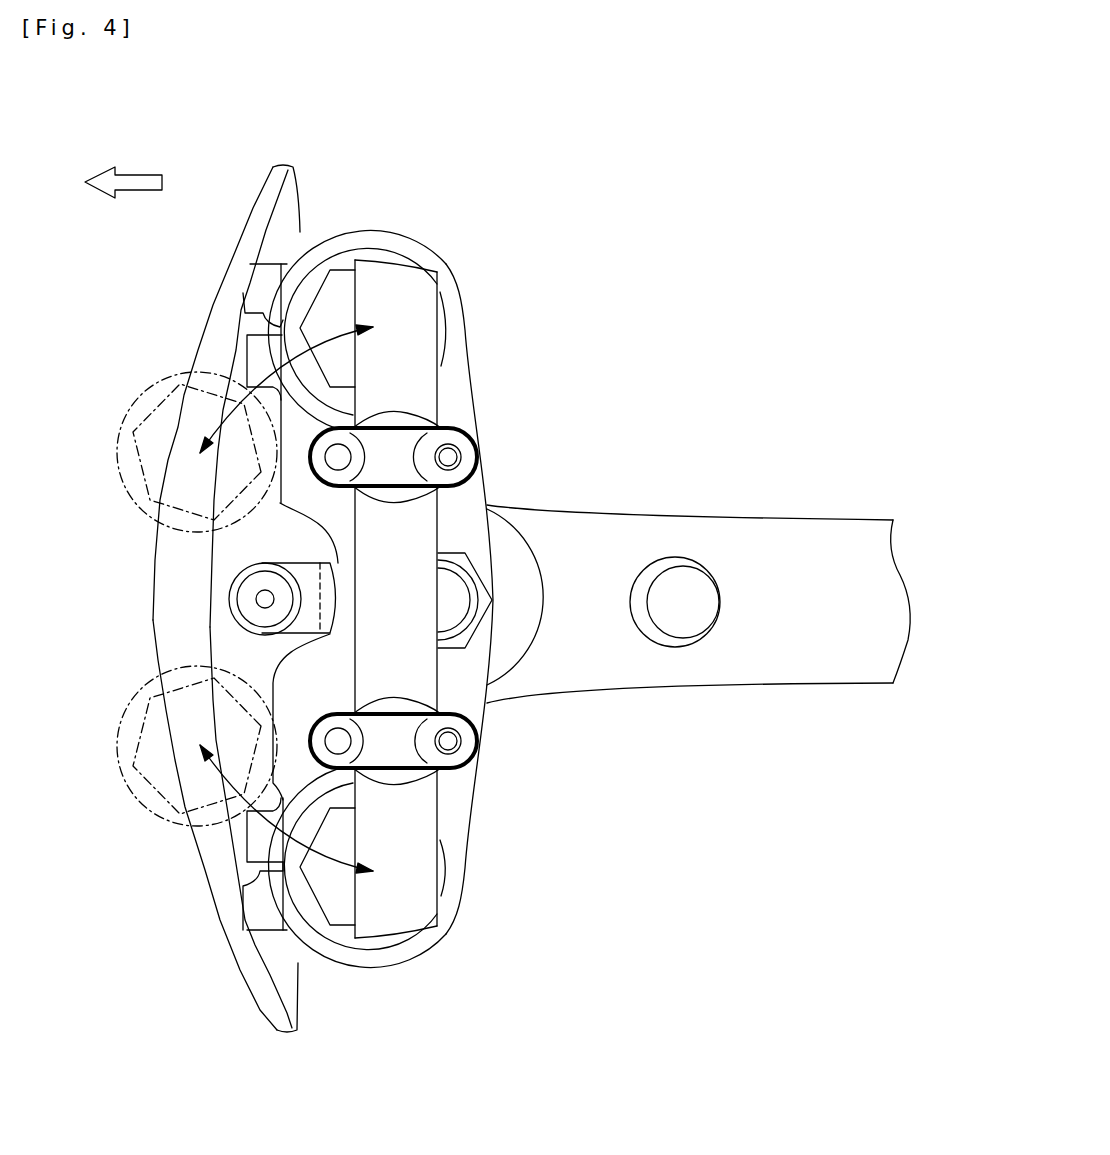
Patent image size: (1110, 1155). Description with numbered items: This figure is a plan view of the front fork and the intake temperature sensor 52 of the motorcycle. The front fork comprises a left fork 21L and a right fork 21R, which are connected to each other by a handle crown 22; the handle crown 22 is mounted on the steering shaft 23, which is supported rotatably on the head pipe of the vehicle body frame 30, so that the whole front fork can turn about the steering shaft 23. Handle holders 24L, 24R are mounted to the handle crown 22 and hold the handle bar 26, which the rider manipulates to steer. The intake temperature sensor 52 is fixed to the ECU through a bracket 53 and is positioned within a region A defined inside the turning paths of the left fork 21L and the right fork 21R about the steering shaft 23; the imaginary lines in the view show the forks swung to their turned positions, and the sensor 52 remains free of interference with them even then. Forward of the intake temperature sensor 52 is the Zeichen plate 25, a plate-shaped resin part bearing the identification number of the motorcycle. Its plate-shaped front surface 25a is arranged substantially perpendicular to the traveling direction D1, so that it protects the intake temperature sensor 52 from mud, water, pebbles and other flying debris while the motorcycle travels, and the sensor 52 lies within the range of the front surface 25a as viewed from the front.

The right fork 21R is at (393, 243).
The left fork 21L is at (397, 953).
The handle crown 22 is at (453, 358).
The steering shaft 23 is at (497, 633).
The handle holder 24R is at (412, 443).
The handle holder 24L is at (410, 753).
The Zeichen plate 25 is at (224, 300).
The front surface 25a is at (155, 543).
The handle bar 26 is at (417, 897).
The vehicle body frame 30 is at (597, 535).
The intake temperature sensor 52 is at (252, 606).
The bracket 53 is at (258, 563).
The region A is at (232, 654).
The traveling direction D1 is at (138, 177).